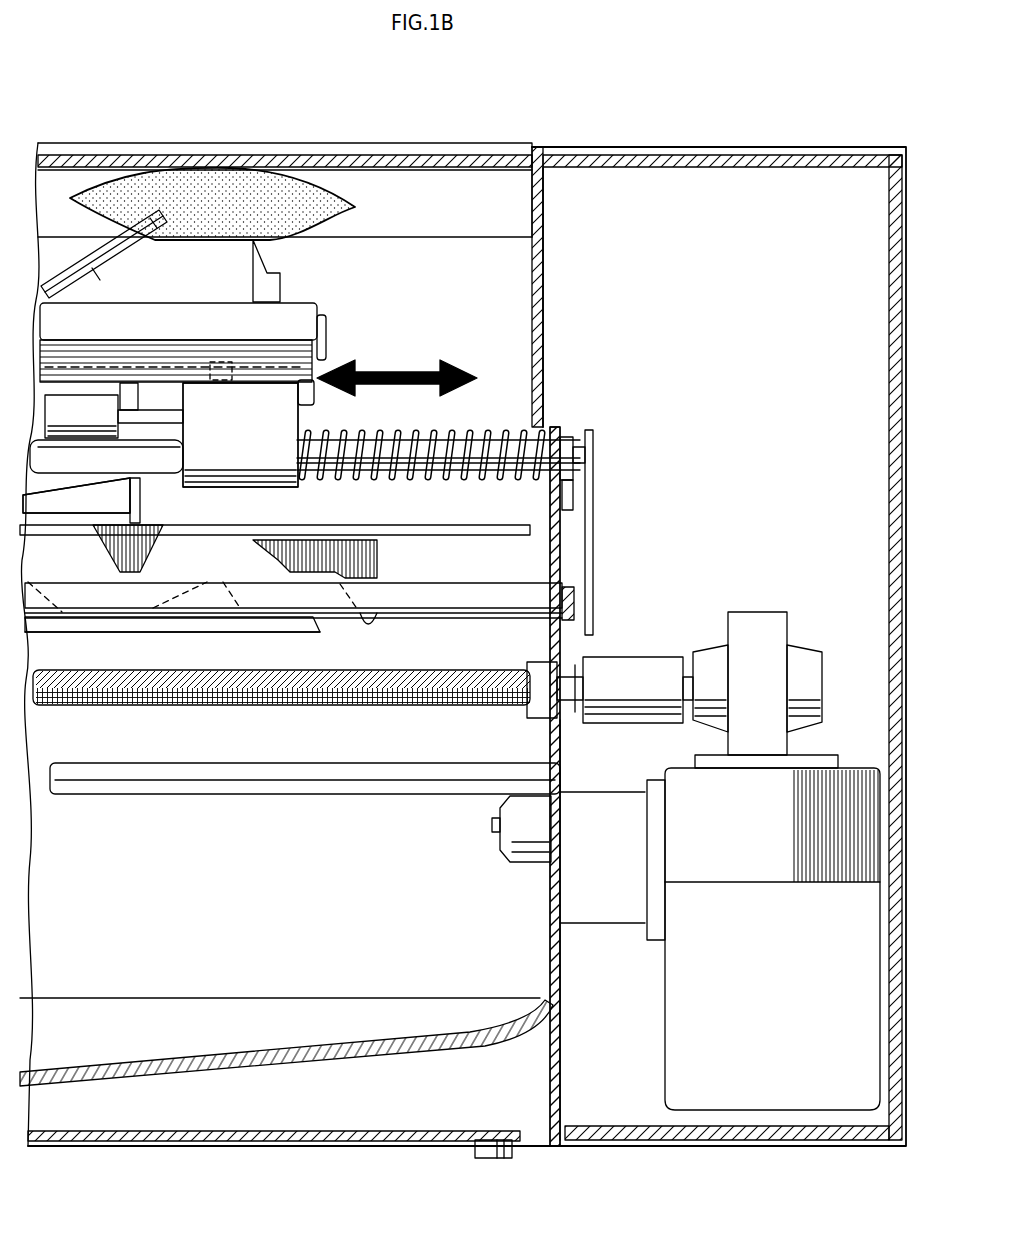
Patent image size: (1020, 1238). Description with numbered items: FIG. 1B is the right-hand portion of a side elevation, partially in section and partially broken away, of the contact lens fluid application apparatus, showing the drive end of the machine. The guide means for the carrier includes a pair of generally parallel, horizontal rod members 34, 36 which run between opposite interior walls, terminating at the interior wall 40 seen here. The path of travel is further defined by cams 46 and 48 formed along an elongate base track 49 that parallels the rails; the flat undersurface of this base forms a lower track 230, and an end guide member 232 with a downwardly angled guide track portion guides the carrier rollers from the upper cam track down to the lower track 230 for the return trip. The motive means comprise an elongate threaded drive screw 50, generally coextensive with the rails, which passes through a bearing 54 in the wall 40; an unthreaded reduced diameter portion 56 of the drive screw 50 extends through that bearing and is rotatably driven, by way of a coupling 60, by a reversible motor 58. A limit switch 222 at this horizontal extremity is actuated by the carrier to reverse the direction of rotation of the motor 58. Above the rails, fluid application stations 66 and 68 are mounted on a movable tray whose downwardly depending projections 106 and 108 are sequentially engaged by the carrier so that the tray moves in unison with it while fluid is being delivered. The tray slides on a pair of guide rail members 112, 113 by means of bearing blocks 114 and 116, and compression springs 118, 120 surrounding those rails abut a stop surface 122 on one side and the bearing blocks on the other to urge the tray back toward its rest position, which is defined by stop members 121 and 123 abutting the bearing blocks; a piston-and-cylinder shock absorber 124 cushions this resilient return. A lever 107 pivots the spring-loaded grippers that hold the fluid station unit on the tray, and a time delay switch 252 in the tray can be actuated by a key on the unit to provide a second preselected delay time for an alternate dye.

The lever 107 is at (118, 253).
The fluid application station 68 is at (216, 350).
The fluid application station 66 is at (52, 350).
The downwardly depending projection 106 is at (126, 382).
The time delay switch 252 is at (328, 338).
The shock absorber 124 is at (114, 410).
The bearing block 114 is at (282, 476).
The bearing block 116 is at (240, 435).
The downwardly depending projection 108 is at (309, 399).
The stop member 121 is at (142, 492).
The stop member 123 is at (76, 495).
The end guide member 232 is at (362, 548).
The compression spring 118 is at (436, 432).
The compression spring 120 is at (422, 455).
The guide rail member 112 is at (432, 468).
The guide rail member 113 is at (438, 455).
The stop surface 122 is at (556, 486).
The rod member 34 is at (416, 598).
The cam 46 is at (30, 584).
The cam 48 is at (216, 580).
The base track 49 is at (128, 632).
The lower track 230 is at (195, 642).
The drive screw 50 is at (384, 716).
The bearing 54 is at (536, 664).
The interior wall 40 is at (551, 727).
The reduced diameter portion 56 is at (580, 684).
The coupling 60 is at (652, 670).
The motor 58 is at (777, 922).
The rod member 36 is at (276, 794).
The limit switch 222 is at (512, 868).